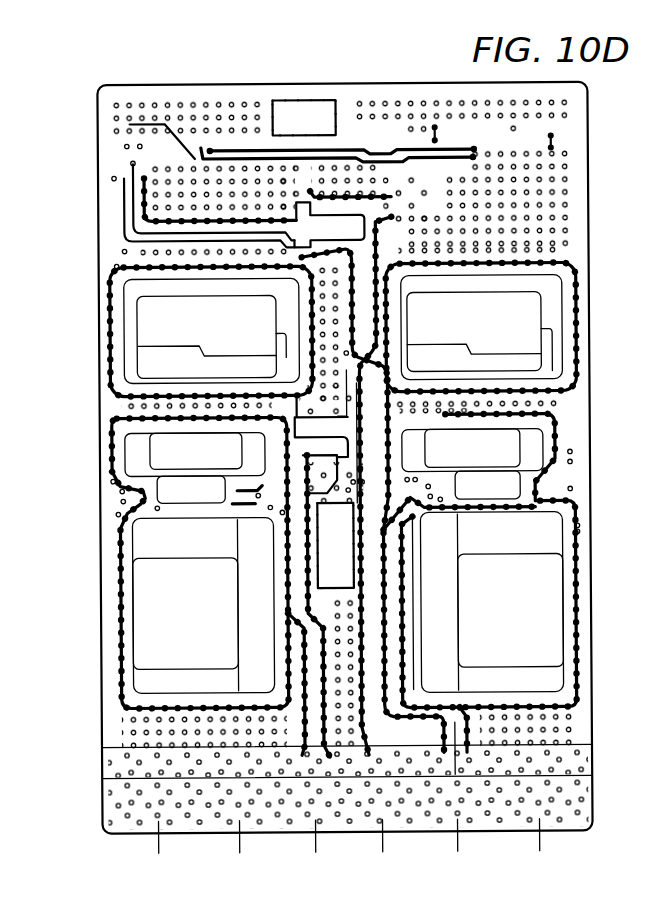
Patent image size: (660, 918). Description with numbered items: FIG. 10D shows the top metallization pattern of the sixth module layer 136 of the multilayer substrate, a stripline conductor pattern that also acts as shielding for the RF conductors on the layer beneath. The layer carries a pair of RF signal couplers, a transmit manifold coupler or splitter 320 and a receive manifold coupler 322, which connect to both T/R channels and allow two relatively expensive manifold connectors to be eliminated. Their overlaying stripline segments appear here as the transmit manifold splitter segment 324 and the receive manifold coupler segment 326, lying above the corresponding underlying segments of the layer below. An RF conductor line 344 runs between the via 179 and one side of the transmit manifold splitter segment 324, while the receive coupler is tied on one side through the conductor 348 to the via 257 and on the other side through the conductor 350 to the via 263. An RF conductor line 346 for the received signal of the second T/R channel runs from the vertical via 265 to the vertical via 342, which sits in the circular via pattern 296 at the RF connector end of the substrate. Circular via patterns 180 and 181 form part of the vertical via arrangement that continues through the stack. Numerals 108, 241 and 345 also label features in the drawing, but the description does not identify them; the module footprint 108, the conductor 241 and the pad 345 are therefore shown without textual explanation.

The module footprint 108 is at (535, 448).
The module layer 136 is at (590, 150).
The via 179 is at (133, 163).
The circular via pattern 180 is at (303, 193).
The circular via pattern 181 is at (120, 152).
The bus trace 241 is at (350, 150).
The via 257 is at (347, 370).
The via 263 is at (340, 470).
The vertical via 265 is at (410, 515).
The circular via pattern 296 is at (453, 775).
The transmit manifold coupler (splitter) 320 is at (353, 227).
The receive manifold coupler 322 is at (307, 423).
The overlaying stripline segment of transmit manifold splitter 324 is at (393, 220).
The overlaying stripline segment of receive manifold coupler 326 is at (292, 432).
The vertical via 342 is at (465, 777).
The RF conductor line 344 is at (137, 203).
The pad 345 is at (318, 214).
The RF conductor line 346 is at (393, 604).
The conductor 348 is at (357, 390).
The conductor 350 is at (338, 456).